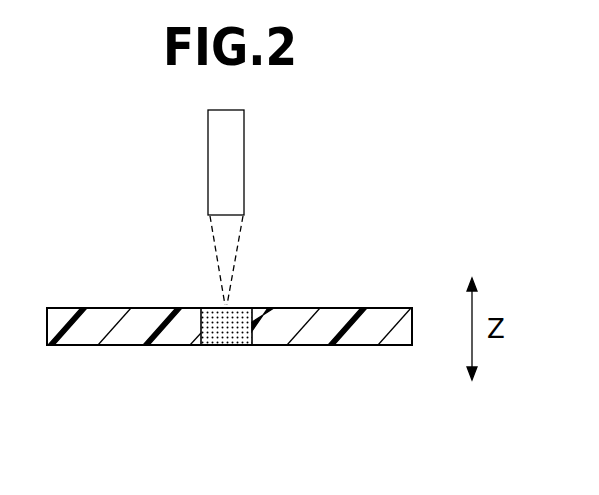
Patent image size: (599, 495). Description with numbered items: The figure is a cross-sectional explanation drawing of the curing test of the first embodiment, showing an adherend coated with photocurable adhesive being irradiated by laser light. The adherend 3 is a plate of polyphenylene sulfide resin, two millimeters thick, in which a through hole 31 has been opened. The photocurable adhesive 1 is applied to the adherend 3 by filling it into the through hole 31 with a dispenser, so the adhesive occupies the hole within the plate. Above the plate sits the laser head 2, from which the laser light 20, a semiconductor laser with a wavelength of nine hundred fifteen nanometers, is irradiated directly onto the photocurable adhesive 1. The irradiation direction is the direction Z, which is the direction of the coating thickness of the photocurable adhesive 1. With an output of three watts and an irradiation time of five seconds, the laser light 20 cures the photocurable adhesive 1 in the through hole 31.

The laser head 2 is at (226, 157).
The laser light 20 is at (238, 255).
The adherend 3 is at (80, 330).
The through hole 31 is at (202, 323).
The photocurable adhesive 1 is at (231, 321).